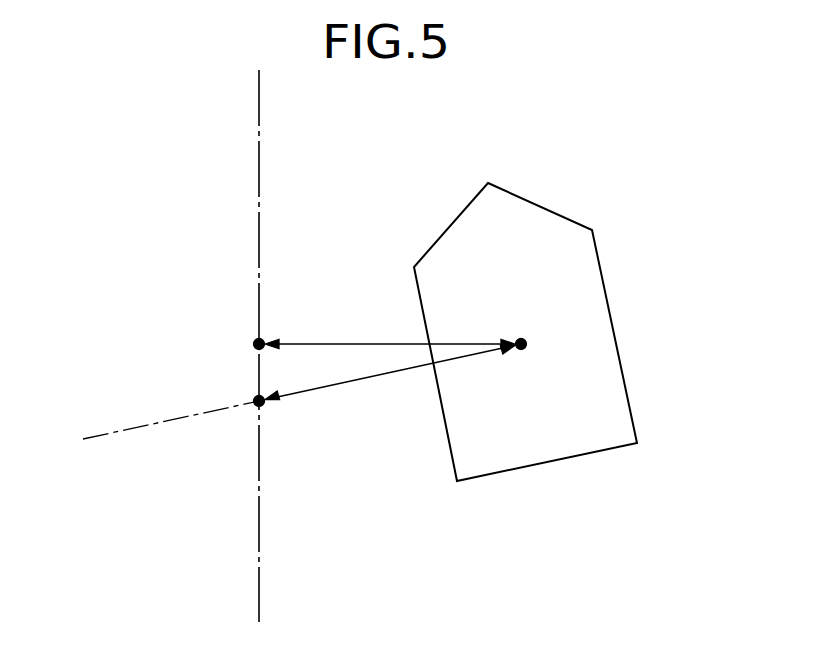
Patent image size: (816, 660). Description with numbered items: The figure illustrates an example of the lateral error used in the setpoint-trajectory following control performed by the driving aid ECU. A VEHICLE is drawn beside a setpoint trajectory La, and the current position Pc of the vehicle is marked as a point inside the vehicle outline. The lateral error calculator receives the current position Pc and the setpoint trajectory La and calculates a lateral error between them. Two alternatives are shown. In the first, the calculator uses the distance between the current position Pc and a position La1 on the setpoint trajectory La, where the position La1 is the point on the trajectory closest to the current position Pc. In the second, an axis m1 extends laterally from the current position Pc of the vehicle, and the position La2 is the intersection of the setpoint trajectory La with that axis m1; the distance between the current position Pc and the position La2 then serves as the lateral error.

The setpoint trajectory La is at (259, 106).
The position on the setpoint trajectory La1 is at (254, 342).
The position on the setpoint trajectory La2 is at (254, 408).
The axis m1 is at (148, 426).
The current position of the vehicle Pc is at (526, 344).
The vehicle VEHICLE is at (540, 206).